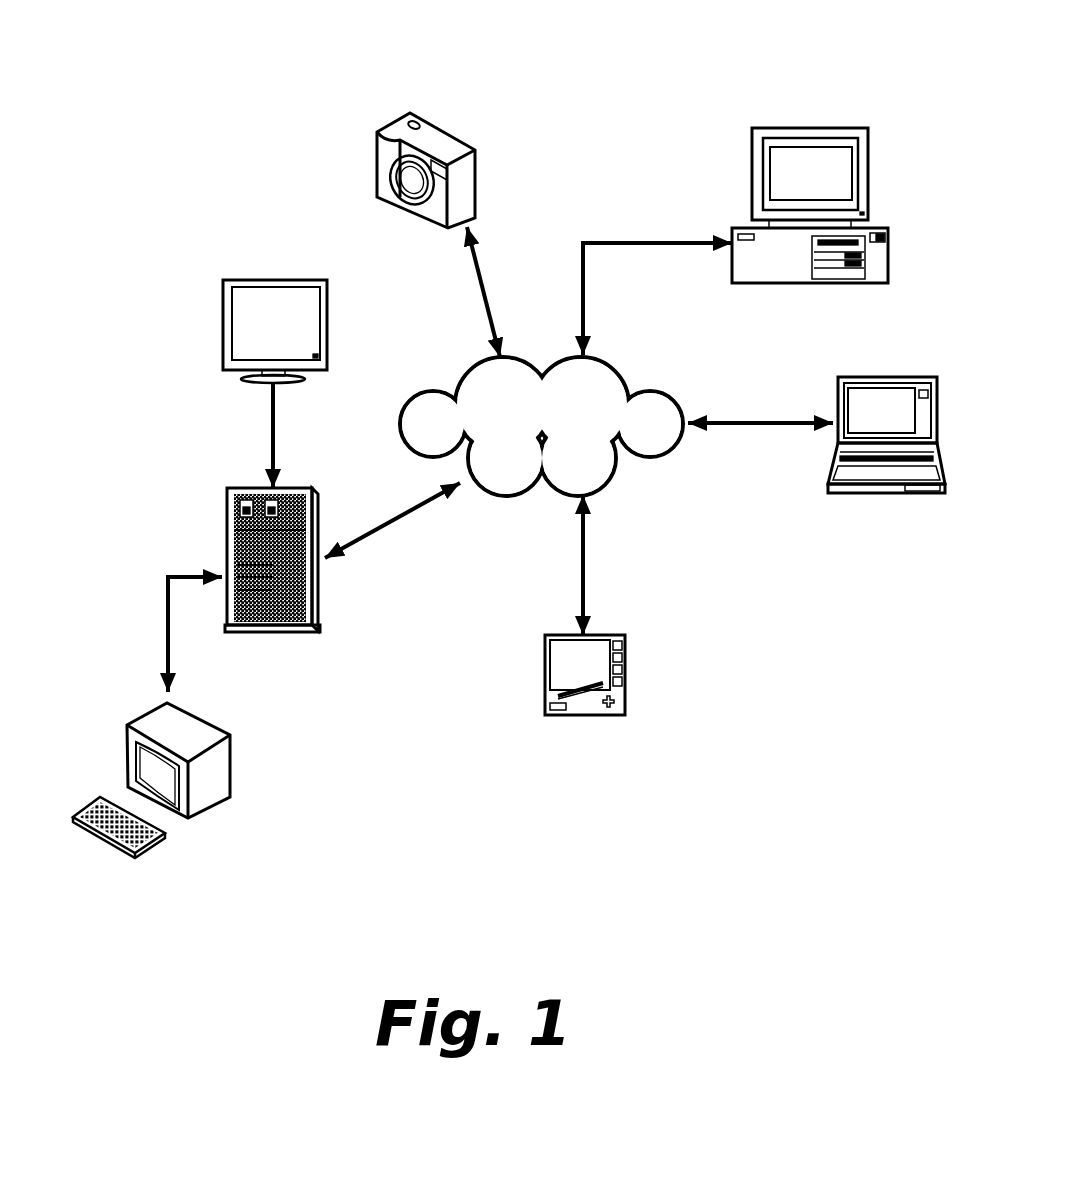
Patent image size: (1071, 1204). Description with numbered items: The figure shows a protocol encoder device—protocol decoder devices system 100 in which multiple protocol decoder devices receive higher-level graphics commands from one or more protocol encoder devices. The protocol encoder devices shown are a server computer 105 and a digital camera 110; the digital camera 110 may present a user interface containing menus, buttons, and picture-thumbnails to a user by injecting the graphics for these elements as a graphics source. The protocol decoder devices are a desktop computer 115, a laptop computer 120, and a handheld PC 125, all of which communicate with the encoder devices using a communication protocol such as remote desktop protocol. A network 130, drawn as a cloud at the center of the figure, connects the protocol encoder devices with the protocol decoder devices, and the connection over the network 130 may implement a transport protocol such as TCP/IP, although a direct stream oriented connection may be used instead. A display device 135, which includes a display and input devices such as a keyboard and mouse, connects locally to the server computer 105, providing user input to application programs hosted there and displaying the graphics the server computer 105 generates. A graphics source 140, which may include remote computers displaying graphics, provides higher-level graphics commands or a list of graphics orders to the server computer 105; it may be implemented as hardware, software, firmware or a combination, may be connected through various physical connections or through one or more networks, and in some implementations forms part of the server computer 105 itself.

The protocol encoder device—protocol decoder devices system 100 is at (558, 56).
The server computer 105 is at (227, 520).
The digital camera 110 is at (378, 165).
The desktop computer 115 is at (808, 128).
The laptop computer 120 is at (888, 377).
The handheld PC 125 is at (625, 672).
The network 130 is at (524, 452).
The display device 135 is at (230, 775).
The graphics source 140 is at (327, 315).